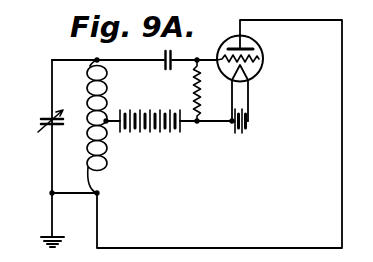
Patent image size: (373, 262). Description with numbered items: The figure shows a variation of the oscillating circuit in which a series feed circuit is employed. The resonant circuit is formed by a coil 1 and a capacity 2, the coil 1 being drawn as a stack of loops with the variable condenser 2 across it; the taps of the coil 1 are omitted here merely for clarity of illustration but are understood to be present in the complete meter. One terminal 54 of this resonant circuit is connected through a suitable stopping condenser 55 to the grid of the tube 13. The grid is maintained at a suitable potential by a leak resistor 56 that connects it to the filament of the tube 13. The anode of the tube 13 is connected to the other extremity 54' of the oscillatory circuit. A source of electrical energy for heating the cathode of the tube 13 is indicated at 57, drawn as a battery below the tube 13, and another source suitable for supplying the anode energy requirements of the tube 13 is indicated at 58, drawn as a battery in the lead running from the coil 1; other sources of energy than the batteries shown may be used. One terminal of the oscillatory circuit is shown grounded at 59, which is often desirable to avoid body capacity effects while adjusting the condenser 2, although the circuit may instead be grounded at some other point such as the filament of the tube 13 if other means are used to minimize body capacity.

The terminal 54 is at (66, 52).
The other extremity 54' is at (102, 204).
The coil 1 is at (85, 136).
The capacity 2 is at (47, 117).
The ground 59 is at (50, 236).
The stopping condenser 55 is at (165, 62).
The leak resistor 56 is at (193, 93).
The source of anode energy 58 is at (148, 133).
The tube 13 is at (263, 65).
The source of electrical energy for heating the cathode 57 is at (244, 131).